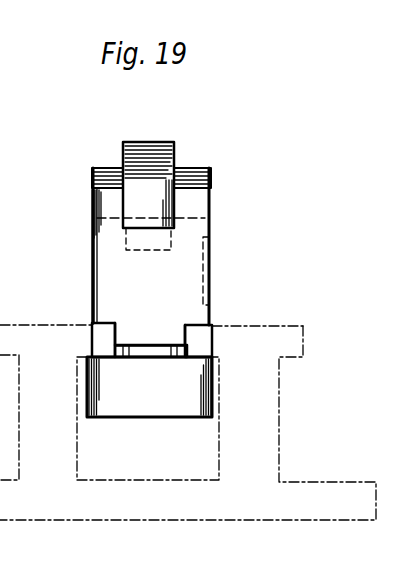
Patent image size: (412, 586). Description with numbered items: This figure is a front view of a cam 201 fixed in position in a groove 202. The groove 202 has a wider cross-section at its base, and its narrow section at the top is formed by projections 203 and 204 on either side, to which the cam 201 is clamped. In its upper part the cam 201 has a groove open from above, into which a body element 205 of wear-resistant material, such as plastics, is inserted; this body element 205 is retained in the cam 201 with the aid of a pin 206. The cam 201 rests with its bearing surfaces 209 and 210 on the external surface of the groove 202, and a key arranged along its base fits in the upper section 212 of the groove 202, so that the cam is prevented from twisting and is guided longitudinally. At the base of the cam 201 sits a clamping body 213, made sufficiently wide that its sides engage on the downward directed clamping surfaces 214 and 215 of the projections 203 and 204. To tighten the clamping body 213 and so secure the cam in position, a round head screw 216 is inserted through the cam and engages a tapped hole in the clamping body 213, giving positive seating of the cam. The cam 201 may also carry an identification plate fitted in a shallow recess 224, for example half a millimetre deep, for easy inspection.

The cam 201 is at (210, 227).
The groove 202 is at (140, 508).
The projection 203 is at (213, 323).
The projection 204 is at (92, 324).
The body element 205 is at (152, 198).
The pin 206 is at (96, 201).
The bearing surface 209 is at (103, 322).
The bearing surface 210 is at (196, 322).
The upper section of the groove 212 is at (120, 352).
The clamping body 213 is at (142, 407).
The clamping surface 214 is at (200, 354).
The clamping surface 215 is at (98, 355).
The round head screw 216 is at (152, 352).
The recess 224 is at (203, 268).